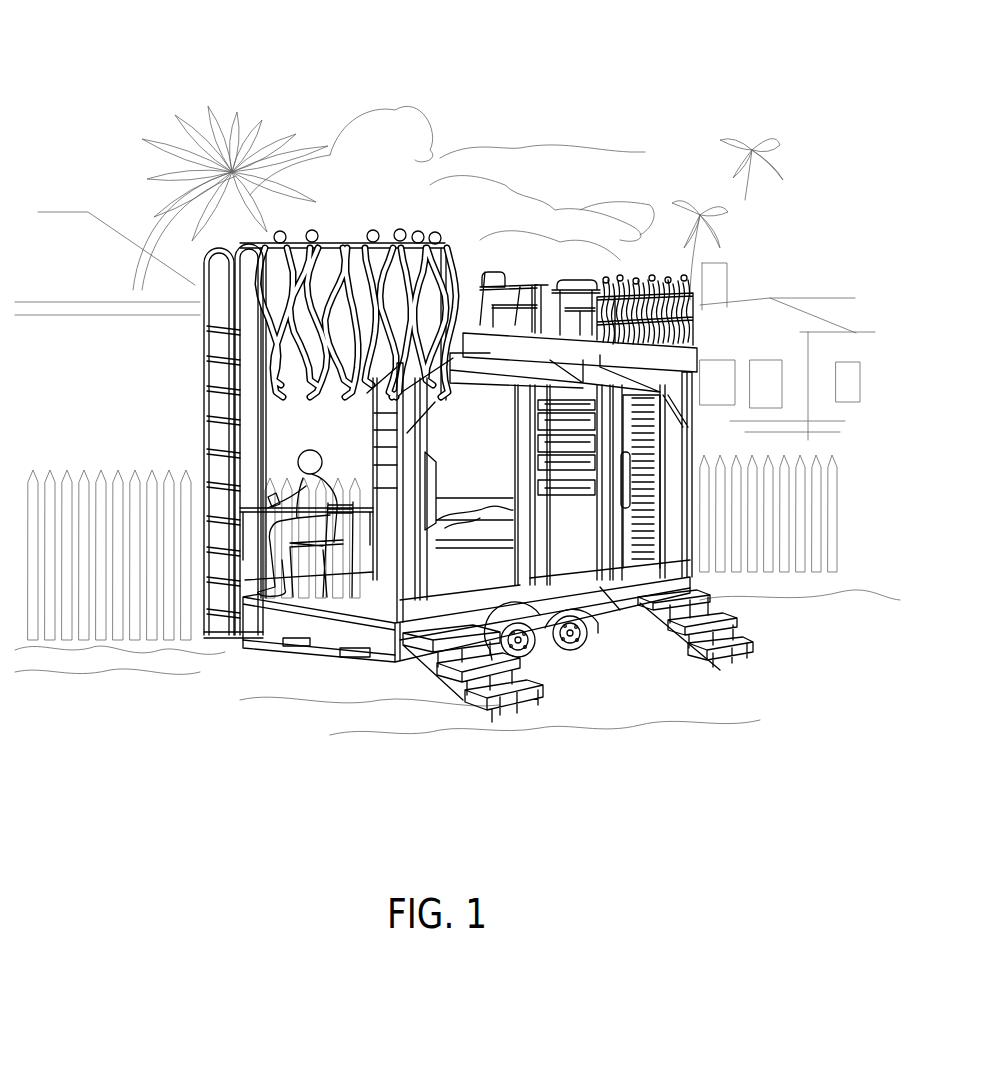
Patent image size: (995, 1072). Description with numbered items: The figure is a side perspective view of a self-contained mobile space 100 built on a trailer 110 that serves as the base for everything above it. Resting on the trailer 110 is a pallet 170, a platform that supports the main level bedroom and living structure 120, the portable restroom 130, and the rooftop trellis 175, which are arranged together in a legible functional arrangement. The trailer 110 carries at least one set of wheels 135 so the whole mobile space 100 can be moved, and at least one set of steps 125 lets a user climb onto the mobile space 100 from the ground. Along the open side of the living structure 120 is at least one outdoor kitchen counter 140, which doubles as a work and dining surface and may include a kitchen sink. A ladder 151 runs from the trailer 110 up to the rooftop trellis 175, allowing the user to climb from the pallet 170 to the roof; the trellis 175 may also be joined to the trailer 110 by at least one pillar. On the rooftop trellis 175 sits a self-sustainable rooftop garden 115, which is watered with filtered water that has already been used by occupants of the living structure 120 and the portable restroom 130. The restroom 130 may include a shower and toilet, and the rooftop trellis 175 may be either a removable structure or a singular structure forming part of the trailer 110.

The self-contained mobile space 100 is at (664, 28).
The trailer 110 is at (257, 640).
The self-sustainable rooftop garden 115 is at (393, 238).
The main level bedroom and living structure 120 is at (570, 590).
The steps 125 is at (463, 703).
The portable restroom 130 is at (690, 530).
The wheels 135 is at (568, 662).
The kitchen counter 140 is at (250, 520).
The ladder 151 is at (203, 345).
The pallet 170 is at (340, 622).
The rooftop trellis 175 is at (697, 350).